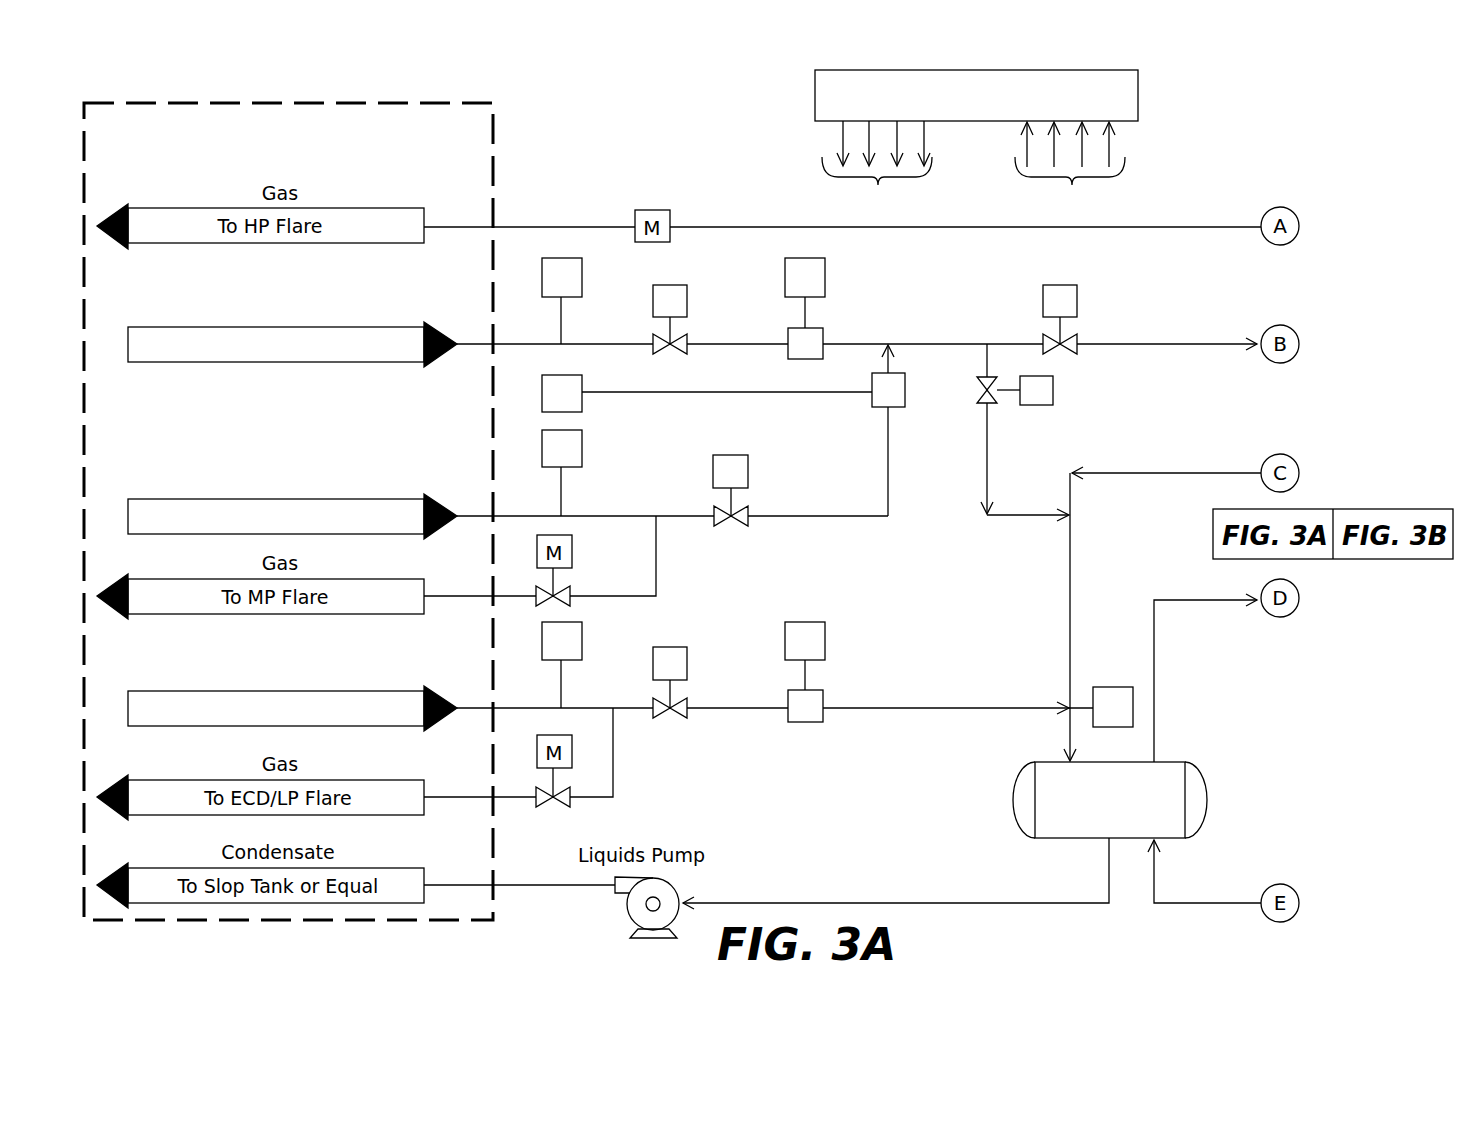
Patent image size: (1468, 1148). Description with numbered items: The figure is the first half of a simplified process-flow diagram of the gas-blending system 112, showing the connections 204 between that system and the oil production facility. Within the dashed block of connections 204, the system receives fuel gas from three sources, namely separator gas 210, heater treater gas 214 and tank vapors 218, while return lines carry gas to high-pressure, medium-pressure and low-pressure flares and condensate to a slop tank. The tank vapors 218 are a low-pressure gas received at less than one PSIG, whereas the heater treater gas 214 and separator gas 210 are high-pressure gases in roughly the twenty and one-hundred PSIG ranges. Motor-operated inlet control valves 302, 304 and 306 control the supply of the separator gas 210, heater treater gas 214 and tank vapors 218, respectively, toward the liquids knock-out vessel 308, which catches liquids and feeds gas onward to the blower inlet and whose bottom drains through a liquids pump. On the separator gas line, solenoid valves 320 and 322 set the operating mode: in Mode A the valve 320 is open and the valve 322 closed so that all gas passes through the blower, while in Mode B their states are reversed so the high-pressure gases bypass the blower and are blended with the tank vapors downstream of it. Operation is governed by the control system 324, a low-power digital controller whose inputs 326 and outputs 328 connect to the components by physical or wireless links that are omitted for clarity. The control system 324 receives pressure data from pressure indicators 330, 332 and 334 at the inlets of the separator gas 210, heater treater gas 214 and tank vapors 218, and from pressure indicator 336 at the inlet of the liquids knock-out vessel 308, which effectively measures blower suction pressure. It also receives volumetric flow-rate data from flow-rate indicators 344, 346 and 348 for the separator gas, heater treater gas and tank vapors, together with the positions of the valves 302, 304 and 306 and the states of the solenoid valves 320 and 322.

The gas-blending system 112 is at (1340, 139).
The connections 204 is at (499, 127).
The separator gas 210 is at (353, 327).
The heater treater gas 214 is at (353, 499).
The tank vapors 218 is at (353, 691).
The motor-operated inlet control valve 302 is at (672, 347).
The motor-operated inlet control valve 304 is at (735, 520).
The motor-operated inlet control valve 306 is at (674, 712).
The liquids knock-out vessel 308 is at (1188, 760).
The solenoid valve 320 is at (1066, 349).
The solenoid valve 322 is at (980, 400).
The control system 324 is at (1138, 96).
The control system inputs 326 is at (1070, 171).
The control system outputs 328 is at (877, 170).
The pressure indicator 330 is at (582, 278).
The pressure indicator 332 is at (582, 456).
The pressure indicator 334 is at (582, 641).
The pressure indicator 336 is at (1133, 689).
The flow-rate indicator 344 is at (825, 279).
The flow-rate indicator 346 is at (582, 405).
The flow-rate indicator 348 is at (812, 622).